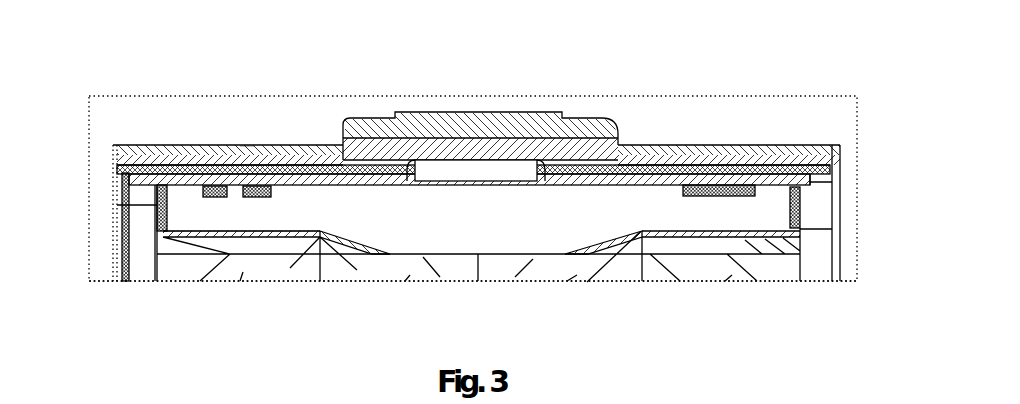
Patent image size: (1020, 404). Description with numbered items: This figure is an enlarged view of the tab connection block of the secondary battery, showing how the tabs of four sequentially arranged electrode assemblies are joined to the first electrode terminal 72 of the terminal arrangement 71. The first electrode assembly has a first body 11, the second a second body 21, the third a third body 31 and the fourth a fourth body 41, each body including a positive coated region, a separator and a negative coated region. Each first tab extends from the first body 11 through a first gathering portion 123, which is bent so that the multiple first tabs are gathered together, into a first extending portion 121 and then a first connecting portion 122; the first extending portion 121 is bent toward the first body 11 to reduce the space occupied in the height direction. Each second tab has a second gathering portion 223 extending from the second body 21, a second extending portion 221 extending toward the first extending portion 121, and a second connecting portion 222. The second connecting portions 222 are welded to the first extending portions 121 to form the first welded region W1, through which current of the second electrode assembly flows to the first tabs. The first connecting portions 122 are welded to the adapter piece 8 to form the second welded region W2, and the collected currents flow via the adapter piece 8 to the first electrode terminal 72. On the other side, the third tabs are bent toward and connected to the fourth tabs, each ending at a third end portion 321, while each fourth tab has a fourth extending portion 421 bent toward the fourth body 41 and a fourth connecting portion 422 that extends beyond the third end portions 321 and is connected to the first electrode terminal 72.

The first body 11 is at (243, 278).
The second body 21 is at (410, 275).
The third body 31 is at (577, 275).
The fourth body 41 is at (732, 275).
The first extending portion 121 is at (157, 232).
The first connecting portion 122 is at (173, 157).
The first gathering portion 123 is at (140, 277).
The second extending portion 221 is at (297, 231).
The second connecting portion 222 is at (168, 200).
The second gathering portion 223 is at (350, 240).
The third end portion 321 is at (797, 190).
The fourth extending portion 421 is at (805, 230).
The fourth connecting portion 422 is at (753, 147).
The adhesive layer 71 is at (667, 147).
The first electrode terminal 72 is at (488, 111).
The adapter piece 8 is at (534, 176).
The first welded region W1 is at (117, 204).
The second welded region W2 is at (247, 145).